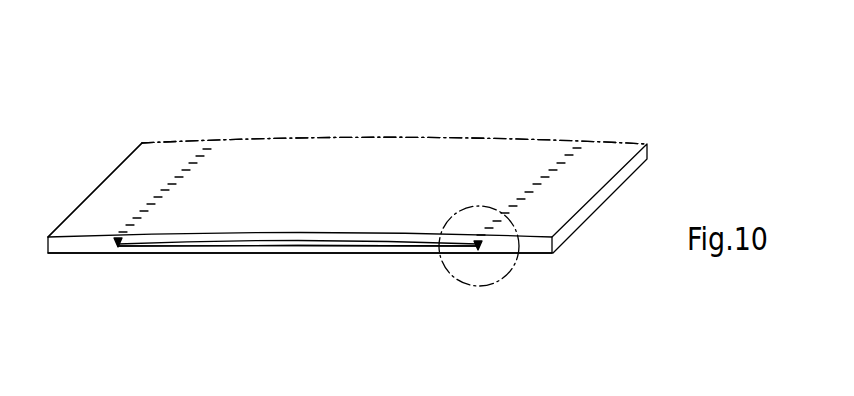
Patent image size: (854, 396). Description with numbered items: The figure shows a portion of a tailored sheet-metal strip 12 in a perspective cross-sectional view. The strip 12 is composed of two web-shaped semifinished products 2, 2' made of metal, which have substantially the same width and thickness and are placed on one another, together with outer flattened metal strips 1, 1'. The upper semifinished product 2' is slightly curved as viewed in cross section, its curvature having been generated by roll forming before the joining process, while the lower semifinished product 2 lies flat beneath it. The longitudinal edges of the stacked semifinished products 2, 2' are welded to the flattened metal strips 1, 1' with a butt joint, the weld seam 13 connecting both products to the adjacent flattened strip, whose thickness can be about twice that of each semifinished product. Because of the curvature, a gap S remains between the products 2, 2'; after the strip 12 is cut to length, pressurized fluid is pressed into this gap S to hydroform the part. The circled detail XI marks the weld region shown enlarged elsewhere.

The flattened metal strip 1 is at (347, 151).
The flattened metal strip 1' is at (129, 151).
The web-shaped semifinished product 2 is at (300, 289).
The web-shaped semifinished product 2' is at (394, 105).
The tailored sheet-metal strip 12 is at (467, 97).
The weld seam 13 is at (118, 248).
The gap S is at (330, 243).
The detail view marker XI is at (438, 212).